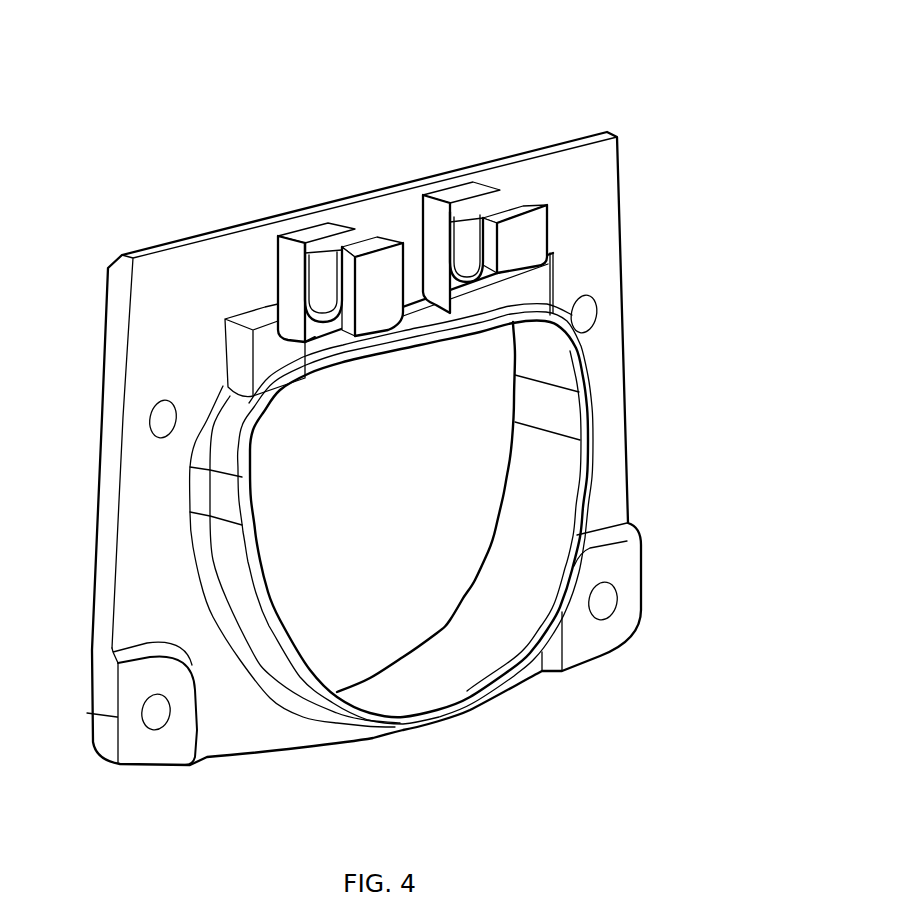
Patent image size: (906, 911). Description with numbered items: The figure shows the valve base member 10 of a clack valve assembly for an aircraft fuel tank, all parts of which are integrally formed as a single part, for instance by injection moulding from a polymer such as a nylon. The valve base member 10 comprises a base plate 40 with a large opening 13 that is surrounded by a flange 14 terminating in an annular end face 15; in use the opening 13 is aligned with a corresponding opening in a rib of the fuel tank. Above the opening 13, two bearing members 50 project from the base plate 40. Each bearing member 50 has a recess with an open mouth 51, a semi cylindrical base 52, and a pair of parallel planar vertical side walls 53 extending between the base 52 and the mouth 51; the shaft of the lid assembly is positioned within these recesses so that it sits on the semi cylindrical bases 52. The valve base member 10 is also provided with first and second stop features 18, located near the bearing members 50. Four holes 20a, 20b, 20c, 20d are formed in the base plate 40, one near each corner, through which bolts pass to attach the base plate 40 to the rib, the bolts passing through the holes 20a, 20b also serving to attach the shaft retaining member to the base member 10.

The valve base member 10 is at (682, 457).
The opening 13 is at (405, 509).
The flange 14 is at (237, 585).
The annular end face 15 is at (463, 712).
The stop features 18 is at (263, 350).
The hole 20a is at (160, 419).
The hole 20b is at (596, 316).
The hole 20c is at (603, 603).
The hole 20d is at (158, 718).
The base plate 40 is at (145, 506).
The bearing members 50 is at (395, 213).
The open mouth 51 is at (395, 255).
The semi cylindrical base 52 is at (323, 282).
The side walls 53 is at (337, 280).